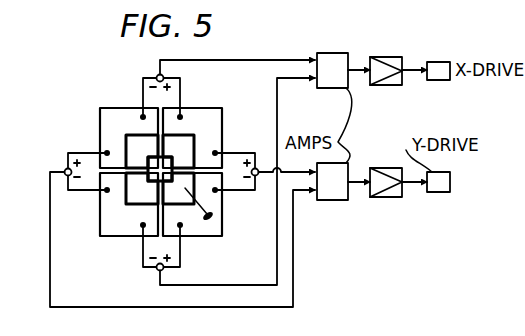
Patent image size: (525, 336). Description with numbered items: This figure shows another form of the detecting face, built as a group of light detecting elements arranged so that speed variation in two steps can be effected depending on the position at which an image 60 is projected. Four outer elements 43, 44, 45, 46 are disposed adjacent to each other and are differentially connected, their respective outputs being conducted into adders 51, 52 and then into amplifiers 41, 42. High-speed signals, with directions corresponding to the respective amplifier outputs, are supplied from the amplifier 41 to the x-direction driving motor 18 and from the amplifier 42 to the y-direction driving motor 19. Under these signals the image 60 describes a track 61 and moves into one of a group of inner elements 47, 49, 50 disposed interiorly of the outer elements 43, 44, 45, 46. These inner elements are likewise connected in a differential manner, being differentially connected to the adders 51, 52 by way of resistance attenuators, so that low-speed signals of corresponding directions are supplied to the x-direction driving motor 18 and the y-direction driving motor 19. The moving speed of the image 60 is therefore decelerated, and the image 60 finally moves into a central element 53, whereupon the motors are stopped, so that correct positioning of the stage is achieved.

The x-direction driving motor 18 is at (135, 138).
The y-direction driving motor 19 is at (440, 192).
The amplifier 41 is at (388, 85).
The amplifier 42 is at (388, 197).
The light detecting element 43 is at (218, 127).
The light detecting element 44 is at (105, 127).
The light detecting element 45 is at (104, 227).
The light detecting element 46 is at (216, 233).
The light detecting element 47 is at (182, 142).
The light detecting element 49 is at (145, 200).
The light detecting element 50 is at (181, 207).
The adder 51 is at (332, 88).
The adder 52 is at (333, 200).
The central element 53 is at (152, 176).
The image 60 is at (213, 231).
The track 61 is at (211, 213).